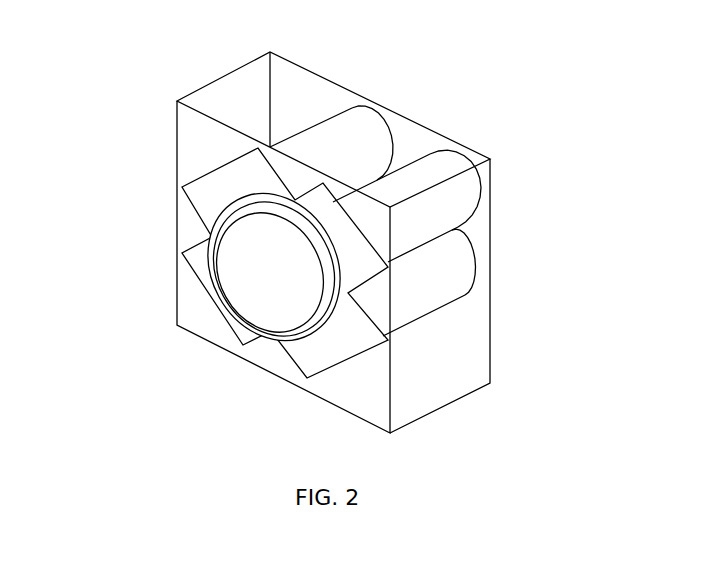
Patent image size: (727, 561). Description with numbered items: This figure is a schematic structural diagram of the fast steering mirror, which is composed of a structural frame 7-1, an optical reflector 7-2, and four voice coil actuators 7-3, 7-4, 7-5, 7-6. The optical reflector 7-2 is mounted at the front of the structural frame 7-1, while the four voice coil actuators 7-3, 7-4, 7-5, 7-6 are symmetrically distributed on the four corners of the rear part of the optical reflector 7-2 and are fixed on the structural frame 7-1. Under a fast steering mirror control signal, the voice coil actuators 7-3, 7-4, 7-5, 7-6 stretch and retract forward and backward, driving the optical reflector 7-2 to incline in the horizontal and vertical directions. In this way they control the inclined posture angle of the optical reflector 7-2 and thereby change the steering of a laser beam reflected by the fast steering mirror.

The structural frame 7-1 is at (236, 95).
The optical reflector 7-2 is at (242, 240).
The voice coil actuator 7-3 is at (372, 138).
The voice coil actuator 7-4 is at (441, 197).
The voice coil actuator 7-5 is at (447, 268).
The voice coil actuator 7-6 is at (362, 192).